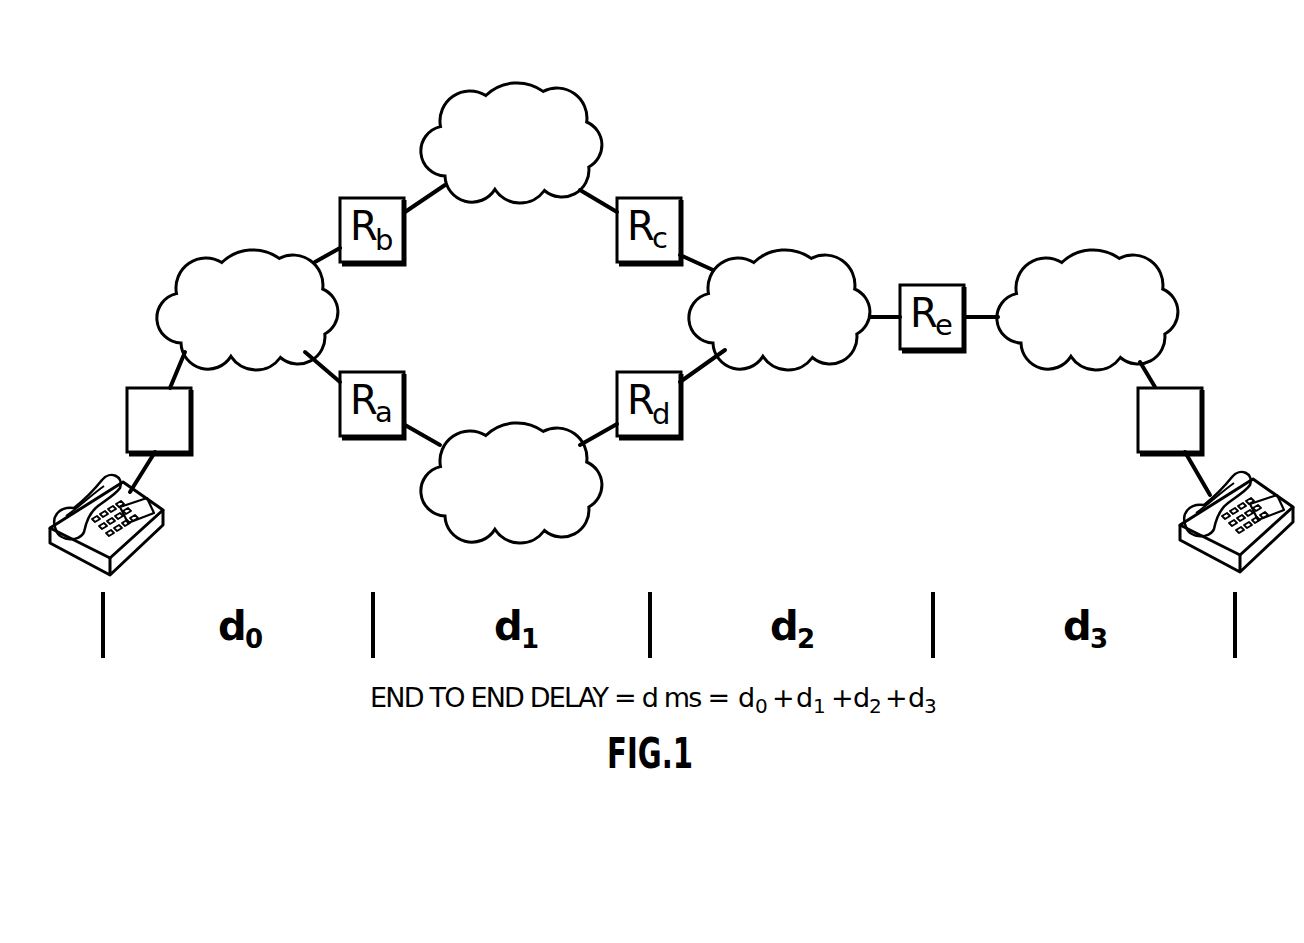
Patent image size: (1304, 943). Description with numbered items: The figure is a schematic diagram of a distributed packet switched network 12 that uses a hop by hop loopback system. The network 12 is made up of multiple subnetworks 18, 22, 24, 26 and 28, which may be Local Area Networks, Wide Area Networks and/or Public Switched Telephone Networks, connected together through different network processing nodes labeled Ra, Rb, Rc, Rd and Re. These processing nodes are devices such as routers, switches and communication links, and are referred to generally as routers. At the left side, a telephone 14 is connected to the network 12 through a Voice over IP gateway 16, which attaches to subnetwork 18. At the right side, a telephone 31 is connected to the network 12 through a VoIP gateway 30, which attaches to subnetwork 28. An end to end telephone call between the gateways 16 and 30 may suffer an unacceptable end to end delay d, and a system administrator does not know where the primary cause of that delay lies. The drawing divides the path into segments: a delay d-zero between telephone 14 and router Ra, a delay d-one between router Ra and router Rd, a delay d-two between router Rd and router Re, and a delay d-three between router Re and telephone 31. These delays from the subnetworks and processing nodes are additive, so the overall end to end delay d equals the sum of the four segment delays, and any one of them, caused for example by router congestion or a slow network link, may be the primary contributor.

The distributed packet switched network 12 is at (1001, 74).
The telephone 14 is at (84, 500).
The Voice over IP gateway 16 is at (191, 420).
The subnetwork 18 is at (256, 250).
The subnetwork 22 is at (519, 84).
The subnetwork 24 is at (519, 424).
The subnetwork 26 is at (786, 250).
The subnetwork 28 is at (1095, 250).
The VoIP gateway 30 is at (1137, 418).
The telephone 31 is at (1272, 498).